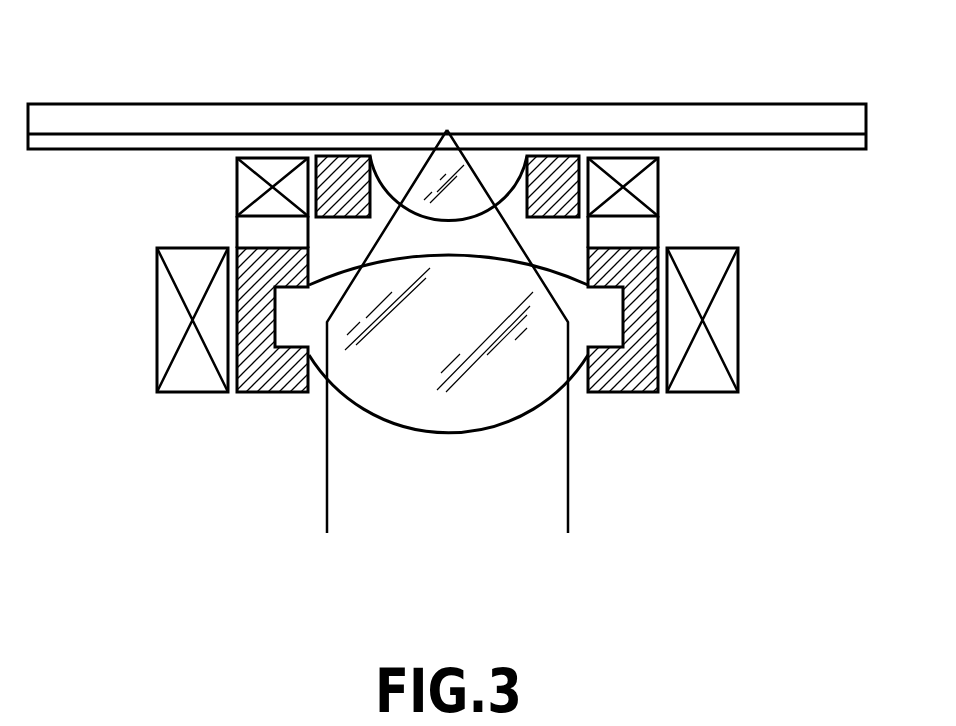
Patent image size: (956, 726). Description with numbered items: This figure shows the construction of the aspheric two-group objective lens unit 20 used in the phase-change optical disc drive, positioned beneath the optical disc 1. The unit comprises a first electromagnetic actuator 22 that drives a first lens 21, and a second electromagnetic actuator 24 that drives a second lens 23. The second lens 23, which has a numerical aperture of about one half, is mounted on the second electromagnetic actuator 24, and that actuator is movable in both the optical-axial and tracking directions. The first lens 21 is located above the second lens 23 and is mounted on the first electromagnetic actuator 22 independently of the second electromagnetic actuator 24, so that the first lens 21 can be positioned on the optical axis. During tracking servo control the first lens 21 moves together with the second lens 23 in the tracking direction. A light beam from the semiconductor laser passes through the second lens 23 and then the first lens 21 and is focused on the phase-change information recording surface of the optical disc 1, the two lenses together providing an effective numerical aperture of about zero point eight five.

The optical disc 1 is at (207, 118).
The aspheric two-group objective lens unit 20 is at (251, 477).
The first lens 21 is at (497, 178).
The first electromagnetic actuator 22 is at (645, 185).
The second lens 23 is at (540, 375).
The second electromagnetic actuator 24 is at (718, 318).